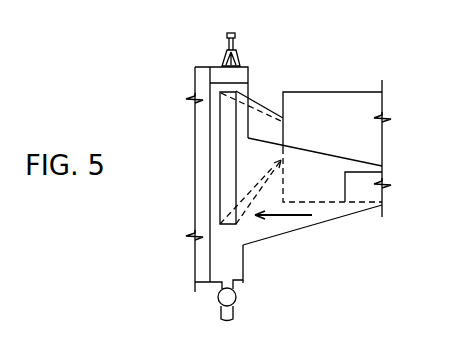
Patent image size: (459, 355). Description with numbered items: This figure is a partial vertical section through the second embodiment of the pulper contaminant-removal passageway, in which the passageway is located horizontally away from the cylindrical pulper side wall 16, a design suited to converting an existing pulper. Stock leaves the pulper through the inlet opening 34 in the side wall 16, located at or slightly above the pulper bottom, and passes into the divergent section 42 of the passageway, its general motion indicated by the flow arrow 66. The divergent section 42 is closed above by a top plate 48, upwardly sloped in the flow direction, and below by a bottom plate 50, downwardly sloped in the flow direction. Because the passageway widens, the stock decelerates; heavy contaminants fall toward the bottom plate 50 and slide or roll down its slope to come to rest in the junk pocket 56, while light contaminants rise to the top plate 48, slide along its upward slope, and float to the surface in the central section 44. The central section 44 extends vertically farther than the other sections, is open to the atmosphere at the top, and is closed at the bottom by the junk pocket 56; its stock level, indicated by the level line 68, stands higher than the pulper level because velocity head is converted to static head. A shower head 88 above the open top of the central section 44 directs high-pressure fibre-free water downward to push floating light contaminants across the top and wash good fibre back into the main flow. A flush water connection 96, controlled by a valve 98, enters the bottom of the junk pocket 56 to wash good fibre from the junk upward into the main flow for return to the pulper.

The side wall 16 is at (330, 92).
The inlet opening 34 is at (376, 176).
The divergent section 42 is at (332, 175).
The central section 44 is at (245, 169).
The top plate 48 is at (333, 157).
The bottom plate 50 is at (310, 228).
The junk pocket 56 is at (236, 268).
The flow arrow 66 is at (287, 215).
The level line 68 is at (240, 75).
The shower head 88 is at (233, 50).
The flush water connection 96 is at (243, 283).
The valve 98 is at (236, 301).